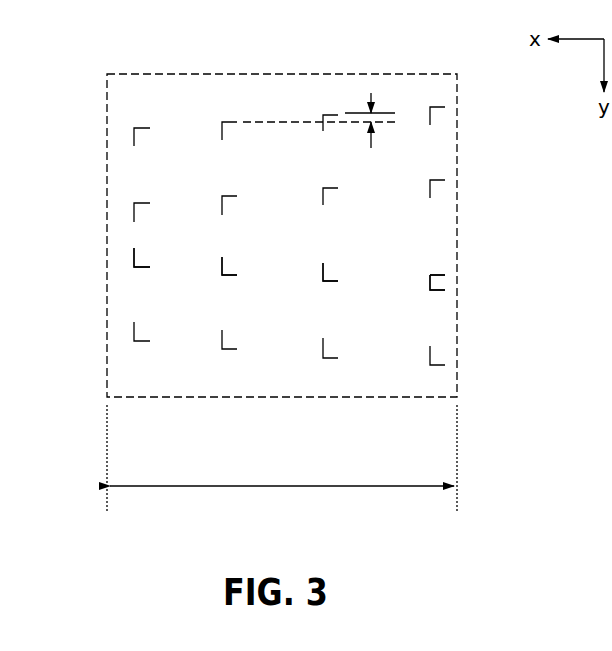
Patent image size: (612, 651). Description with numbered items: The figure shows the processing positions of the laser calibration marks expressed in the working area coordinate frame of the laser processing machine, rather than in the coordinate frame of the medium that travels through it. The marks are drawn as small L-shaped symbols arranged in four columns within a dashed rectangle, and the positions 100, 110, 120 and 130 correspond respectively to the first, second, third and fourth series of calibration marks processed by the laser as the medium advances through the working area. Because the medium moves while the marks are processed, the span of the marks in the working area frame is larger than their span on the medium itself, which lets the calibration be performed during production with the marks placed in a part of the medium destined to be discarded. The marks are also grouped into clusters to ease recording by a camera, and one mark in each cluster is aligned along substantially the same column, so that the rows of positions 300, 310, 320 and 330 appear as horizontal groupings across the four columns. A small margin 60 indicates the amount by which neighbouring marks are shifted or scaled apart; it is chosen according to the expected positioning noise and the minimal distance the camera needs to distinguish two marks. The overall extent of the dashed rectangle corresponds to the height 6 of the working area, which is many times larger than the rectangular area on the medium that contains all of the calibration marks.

The processing position 100 is at (437, 106).
The processing position 110 is at (330, 114).
The processing position 120 is at (233, 121).
The processing position 130 is at (140, 127).
The margin 60 is at (370, 92).
The first alignment mark row 300 is at (445, 275).
The second alignment mark row 310 is at (325, 285).
The third alignment mark row 320 is at (222, 272).
The fourth alignment mark row 330 is at (134, 257).
The height of the working area 6 is at (283, 487).